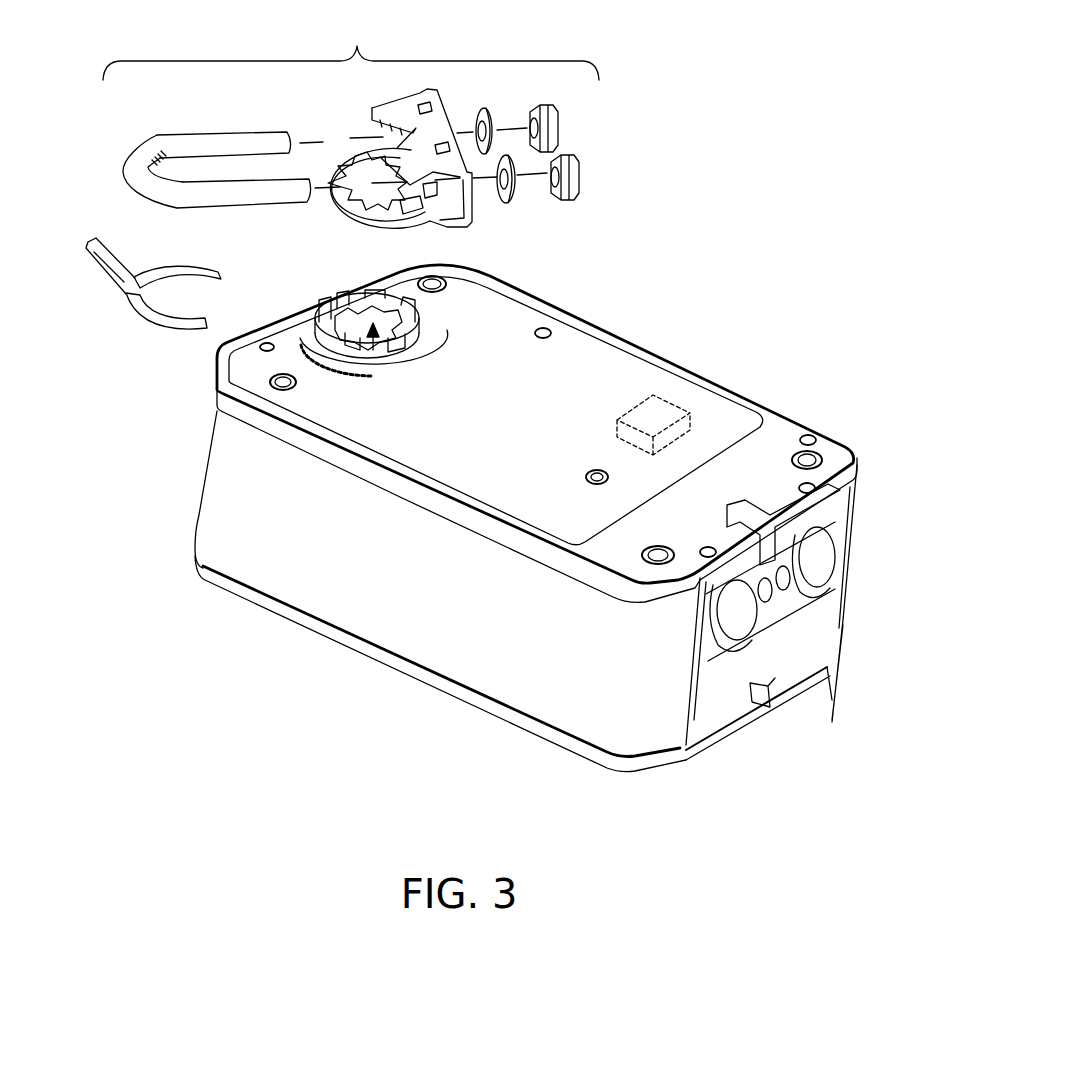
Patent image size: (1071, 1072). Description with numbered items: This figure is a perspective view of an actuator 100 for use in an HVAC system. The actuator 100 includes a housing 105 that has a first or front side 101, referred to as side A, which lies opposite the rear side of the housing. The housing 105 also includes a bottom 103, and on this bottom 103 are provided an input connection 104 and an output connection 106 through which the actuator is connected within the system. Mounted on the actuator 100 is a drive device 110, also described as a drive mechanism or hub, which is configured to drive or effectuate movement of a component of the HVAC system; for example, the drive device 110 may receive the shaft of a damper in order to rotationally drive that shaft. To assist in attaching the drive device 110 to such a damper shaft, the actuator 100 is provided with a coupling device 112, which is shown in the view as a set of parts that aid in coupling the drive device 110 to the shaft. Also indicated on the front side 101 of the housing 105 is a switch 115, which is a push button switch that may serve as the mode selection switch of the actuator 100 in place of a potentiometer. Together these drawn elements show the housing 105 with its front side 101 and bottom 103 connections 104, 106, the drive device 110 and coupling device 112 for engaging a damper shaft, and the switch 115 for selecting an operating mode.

The actuator 100 is at (704, 206).
The first side 101 is at (596, 357).
The bottom 103 is at (714, 705).
The input connection 104 is at (736, 618).
The housing 105 is at (343, 597).
The output connection 106 is at (818, 565).
The drive device 110 is at (380, 356).
The coupling device 112 is at (342, 173).
The switch 115 is at (660, 413).